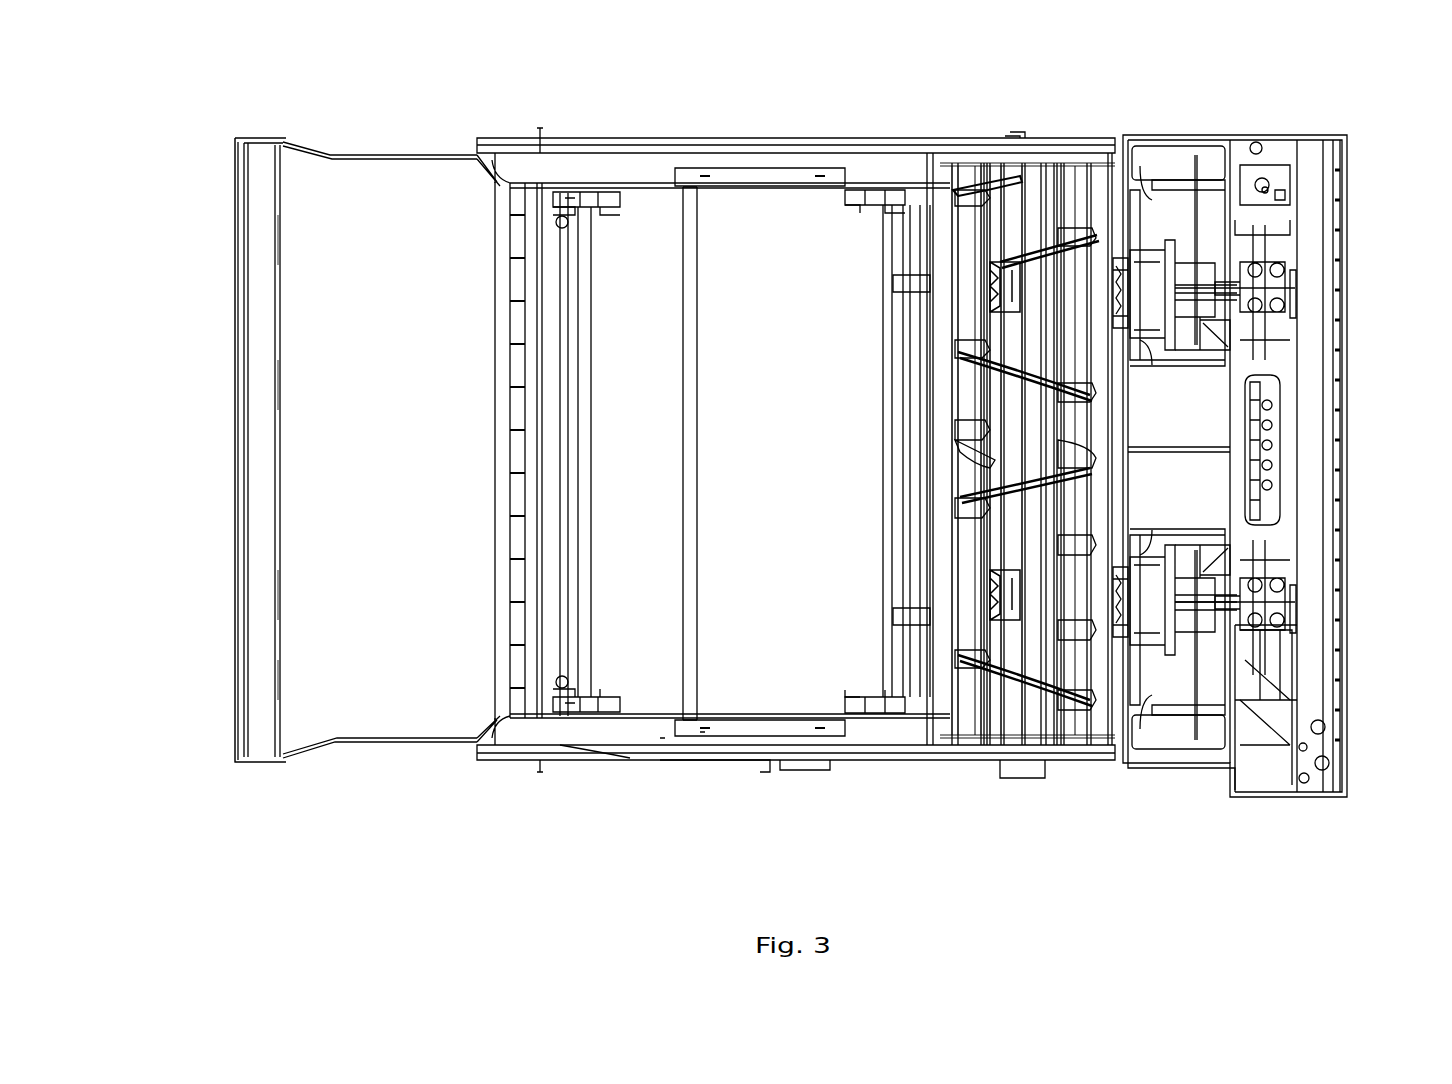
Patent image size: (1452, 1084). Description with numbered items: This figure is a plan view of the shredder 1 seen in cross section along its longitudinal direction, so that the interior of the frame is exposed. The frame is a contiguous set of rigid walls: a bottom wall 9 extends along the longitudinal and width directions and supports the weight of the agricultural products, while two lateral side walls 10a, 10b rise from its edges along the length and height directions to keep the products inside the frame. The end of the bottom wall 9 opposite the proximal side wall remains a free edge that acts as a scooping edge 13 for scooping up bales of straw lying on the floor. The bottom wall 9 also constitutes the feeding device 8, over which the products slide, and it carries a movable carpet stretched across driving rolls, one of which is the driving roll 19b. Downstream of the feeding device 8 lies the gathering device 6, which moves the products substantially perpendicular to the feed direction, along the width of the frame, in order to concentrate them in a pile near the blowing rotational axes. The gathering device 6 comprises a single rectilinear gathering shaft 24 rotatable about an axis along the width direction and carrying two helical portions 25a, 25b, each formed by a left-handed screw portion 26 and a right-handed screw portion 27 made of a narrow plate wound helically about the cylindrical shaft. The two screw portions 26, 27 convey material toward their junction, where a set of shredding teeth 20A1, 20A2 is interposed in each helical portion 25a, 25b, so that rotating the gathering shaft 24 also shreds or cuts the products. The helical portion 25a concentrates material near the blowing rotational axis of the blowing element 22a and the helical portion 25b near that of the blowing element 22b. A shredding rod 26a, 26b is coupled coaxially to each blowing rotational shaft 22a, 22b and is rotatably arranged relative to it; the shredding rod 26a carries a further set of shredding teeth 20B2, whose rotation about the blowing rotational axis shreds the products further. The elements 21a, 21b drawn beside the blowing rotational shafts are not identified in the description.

The shredder 1 is at (205, 251).
The scooping edge 13 is at (212, 675).
The lateral side wall 10b is at (652, 138).
The lateral side wall 10a is at (660, 754).
The gathering device 6 is at (1009, 183).
The feeding device 8 is at (779, 686).
The bottom wall 9 is at (743, 504).
The driving roll 19b is at (591, 706).
The gathering shaft 24 is at (1011, 721).
The left-handed screw portion 26 is at (960, 352).
The right-handed screw portion 27 is at (1085, 230).
The shredding teeth 20A1 is at (995, 597).
The shredding teeth 20A2 is at (995, 287).
The shredding teeth 20B2 is at (1105, 255).
The helical portion 25a is at (954, 306).
The helical portion 25b is at (952, 566).
The first motor 21a is at (1227, 203).
The second motor 21b is at (1223, 692).
The blowing rotational shaft 22a is at (1225, 291).
The blowing rotational shaft 22b is at (1225, 605).
The shredding rod 26a is at (1160, 265).
The shredding rod 26b is at (1148, 658).